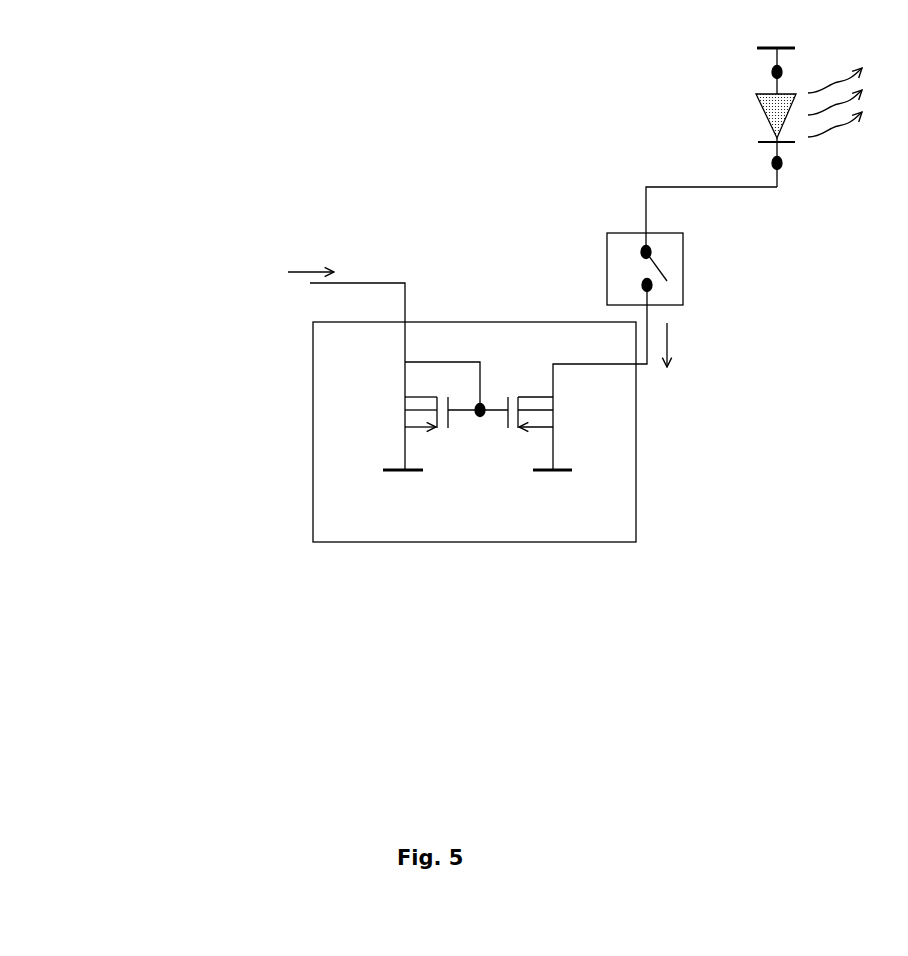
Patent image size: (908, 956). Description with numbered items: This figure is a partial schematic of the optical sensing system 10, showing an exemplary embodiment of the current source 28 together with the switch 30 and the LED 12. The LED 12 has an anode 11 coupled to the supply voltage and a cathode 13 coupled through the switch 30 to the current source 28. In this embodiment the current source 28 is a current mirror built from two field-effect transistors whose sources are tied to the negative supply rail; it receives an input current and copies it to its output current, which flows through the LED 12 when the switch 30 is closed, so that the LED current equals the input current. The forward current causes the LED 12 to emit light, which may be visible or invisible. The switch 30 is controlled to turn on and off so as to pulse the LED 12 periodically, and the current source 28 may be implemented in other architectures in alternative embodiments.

The optical sensing system 10 is at (285, 113).
The anode 11 is at (772, 72).
The LED 12 is at (762, 117).
The cathode 13 is at (780, 167).
The current source 28 is at (312, 380).
The switch 30 is at (615, 242).